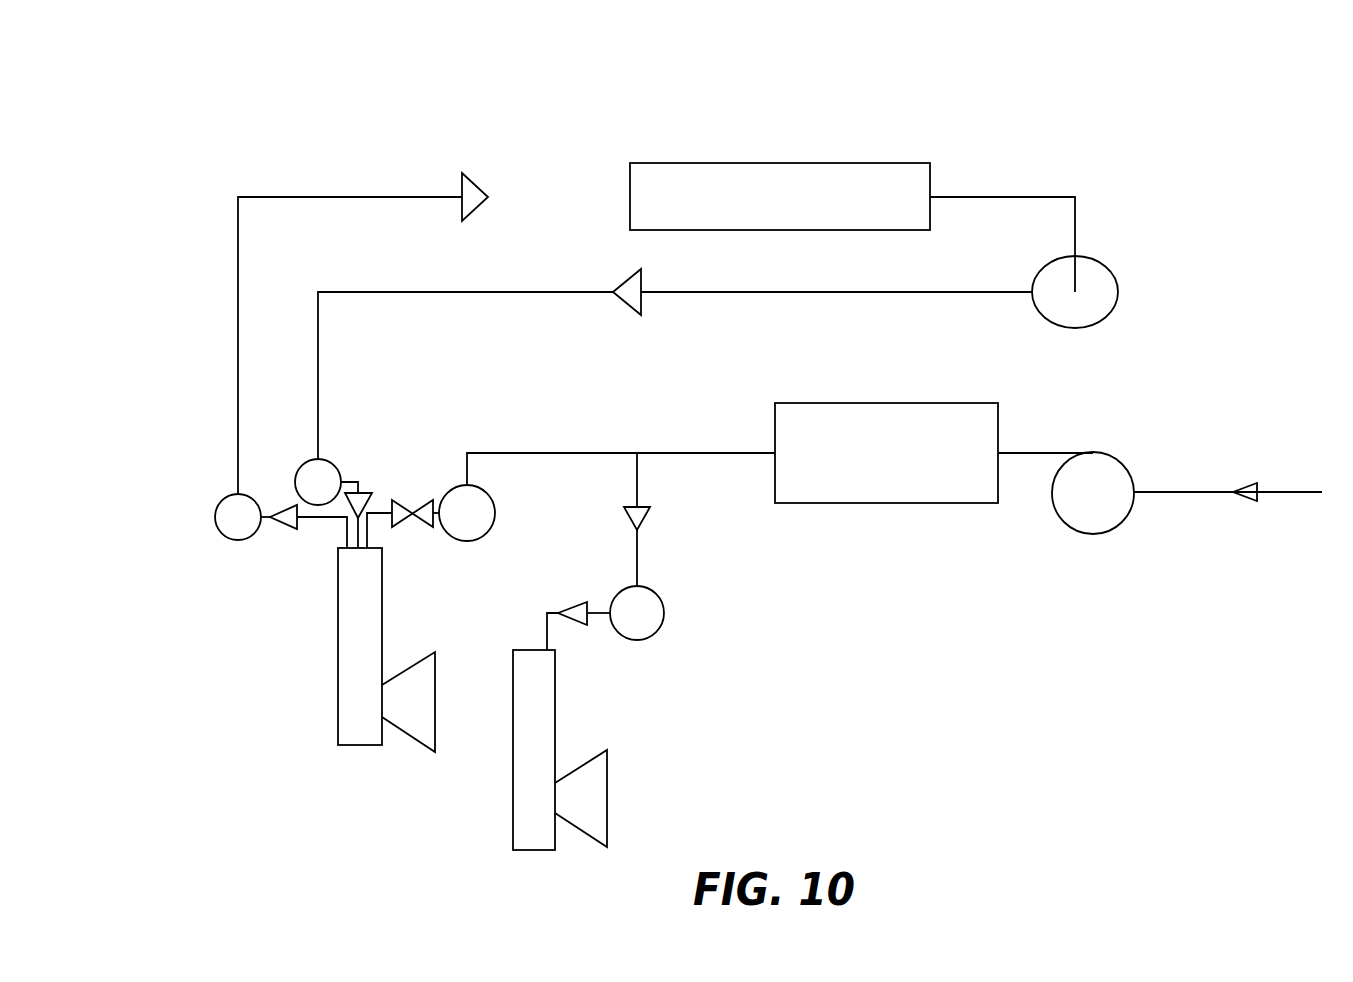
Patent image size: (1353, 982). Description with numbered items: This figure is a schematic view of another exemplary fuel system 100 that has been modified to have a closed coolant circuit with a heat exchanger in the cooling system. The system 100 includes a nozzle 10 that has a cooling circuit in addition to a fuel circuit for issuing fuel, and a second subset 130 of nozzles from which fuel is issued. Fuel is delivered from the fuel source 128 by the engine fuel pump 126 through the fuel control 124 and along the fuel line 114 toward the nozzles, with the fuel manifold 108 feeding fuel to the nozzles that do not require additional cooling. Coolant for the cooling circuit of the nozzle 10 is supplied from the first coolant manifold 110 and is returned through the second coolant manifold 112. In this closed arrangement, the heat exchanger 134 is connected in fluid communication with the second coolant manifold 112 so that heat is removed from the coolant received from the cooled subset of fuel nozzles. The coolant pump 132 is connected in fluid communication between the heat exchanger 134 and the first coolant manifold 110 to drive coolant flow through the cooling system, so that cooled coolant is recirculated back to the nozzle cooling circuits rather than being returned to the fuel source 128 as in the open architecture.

The fuel system 100 is at (152, 150).
The nozzle 10 is at (337, 628).
The fuel manifold 108 is at (637, 545).
The coolant manifold 110 is at (318, 360).
The coolant manifold 112 is at (238, 348).
The feed line 114 is at (550, 453).
The fuel control 124 is at (912, 503).
The engine fuel pump 126 is at (1063, 522).
The fuel source 128 is at (1197, 492).
The second subset of nozzles 130 is at (513, 798).
The coolant pump 132 is at (1110, 271).
The heat exchanger 134 is at (867, 175).